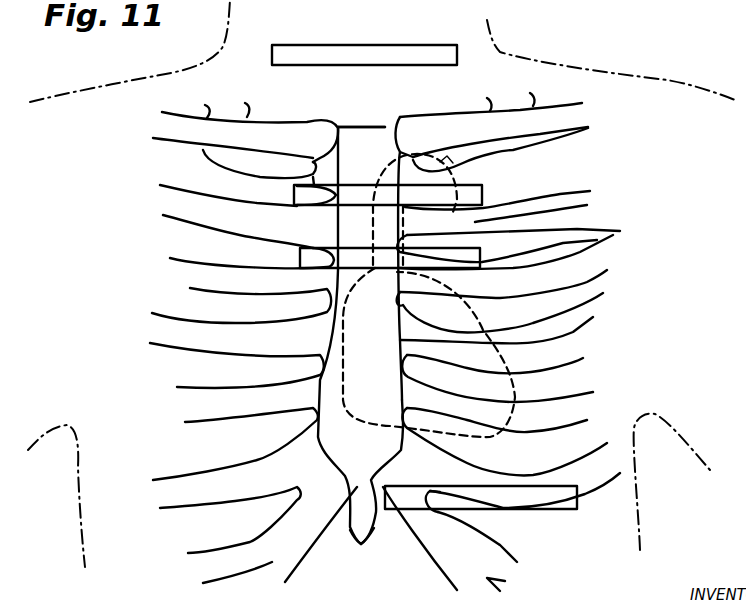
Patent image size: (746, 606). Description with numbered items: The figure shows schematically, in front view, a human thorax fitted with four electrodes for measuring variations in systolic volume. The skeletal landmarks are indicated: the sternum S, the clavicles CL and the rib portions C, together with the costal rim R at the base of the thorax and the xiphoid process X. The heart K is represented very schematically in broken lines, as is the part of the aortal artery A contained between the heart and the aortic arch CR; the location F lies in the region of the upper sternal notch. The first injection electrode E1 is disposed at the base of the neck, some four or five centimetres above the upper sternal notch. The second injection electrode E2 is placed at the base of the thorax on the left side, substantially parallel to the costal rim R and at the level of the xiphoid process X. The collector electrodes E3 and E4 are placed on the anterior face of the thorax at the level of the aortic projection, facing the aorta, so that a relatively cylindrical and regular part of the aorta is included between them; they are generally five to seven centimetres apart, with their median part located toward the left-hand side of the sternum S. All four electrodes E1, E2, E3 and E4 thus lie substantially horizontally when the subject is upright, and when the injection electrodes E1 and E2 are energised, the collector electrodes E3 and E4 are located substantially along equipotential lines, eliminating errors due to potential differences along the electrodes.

The clavicles CL is at (182, 125).
The aortic arch CR is at (447, 156).
The jugular notch (fossa) F is at (350, 125).
The aortal artery A is at (398, 157).
The sternum S is at (337, 227).
The rib portions C is at (225, 157).
The heart K is at (593, 392).
The xiphoid process X is at (360, 527).
The costal rim R is at (437, 513).
The first injection electrode E1 is at (457, 52).
The second injection electrode E2 is at (577, 510).
The collector electrode E3 is at (482, 192).
The collector electrode E4 is at (613, 235).